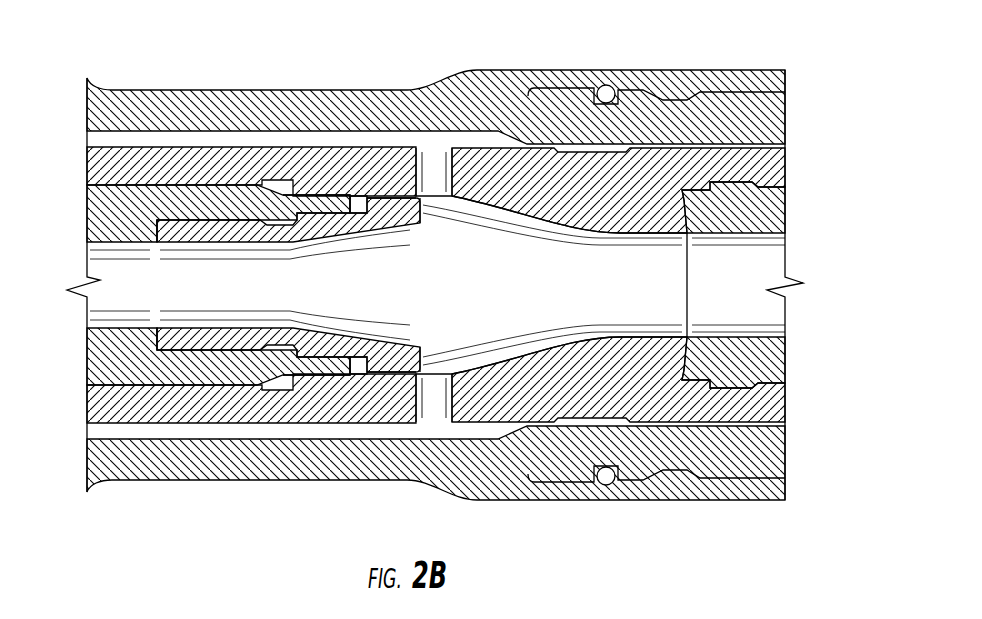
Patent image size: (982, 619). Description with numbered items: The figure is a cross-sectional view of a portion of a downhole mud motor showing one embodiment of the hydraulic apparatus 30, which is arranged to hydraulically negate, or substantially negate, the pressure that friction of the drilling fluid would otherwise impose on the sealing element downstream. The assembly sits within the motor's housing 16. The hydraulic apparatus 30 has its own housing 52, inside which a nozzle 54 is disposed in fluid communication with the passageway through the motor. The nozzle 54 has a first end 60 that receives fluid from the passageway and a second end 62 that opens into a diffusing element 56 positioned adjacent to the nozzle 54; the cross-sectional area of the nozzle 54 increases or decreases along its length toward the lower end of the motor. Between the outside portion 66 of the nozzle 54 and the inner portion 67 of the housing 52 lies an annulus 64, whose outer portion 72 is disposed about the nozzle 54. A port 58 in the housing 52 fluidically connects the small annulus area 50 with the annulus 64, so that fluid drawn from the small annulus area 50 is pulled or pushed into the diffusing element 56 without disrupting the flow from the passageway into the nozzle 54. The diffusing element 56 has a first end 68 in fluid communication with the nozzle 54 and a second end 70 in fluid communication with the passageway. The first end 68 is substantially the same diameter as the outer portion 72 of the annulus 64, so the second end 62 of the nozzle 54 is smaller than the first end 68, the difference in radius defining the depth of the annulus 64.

The housing 16 is at (528, 89).
The hydraulic apparatus 30 is at (787, 64).
The small annulus area 50 is at (172, 131).
The housing 52 is at (471, 195).
The nozzle 54 is at (247, 221).
The diffusing element 56 is at (516, 355).
The port 58 is at (430, 172).
The first end 60 is at (143, 237).
The second end 62 is at (425, 360).
The annulus 64 is at (427, 200).
The outside portion 66 is at (380, 198).
The inner portion 67 is at (352, 376).
The first end 68 is at (448, 365).
The second end 70 is at (605, 335).
The outer portion 72 is at (373, 193).